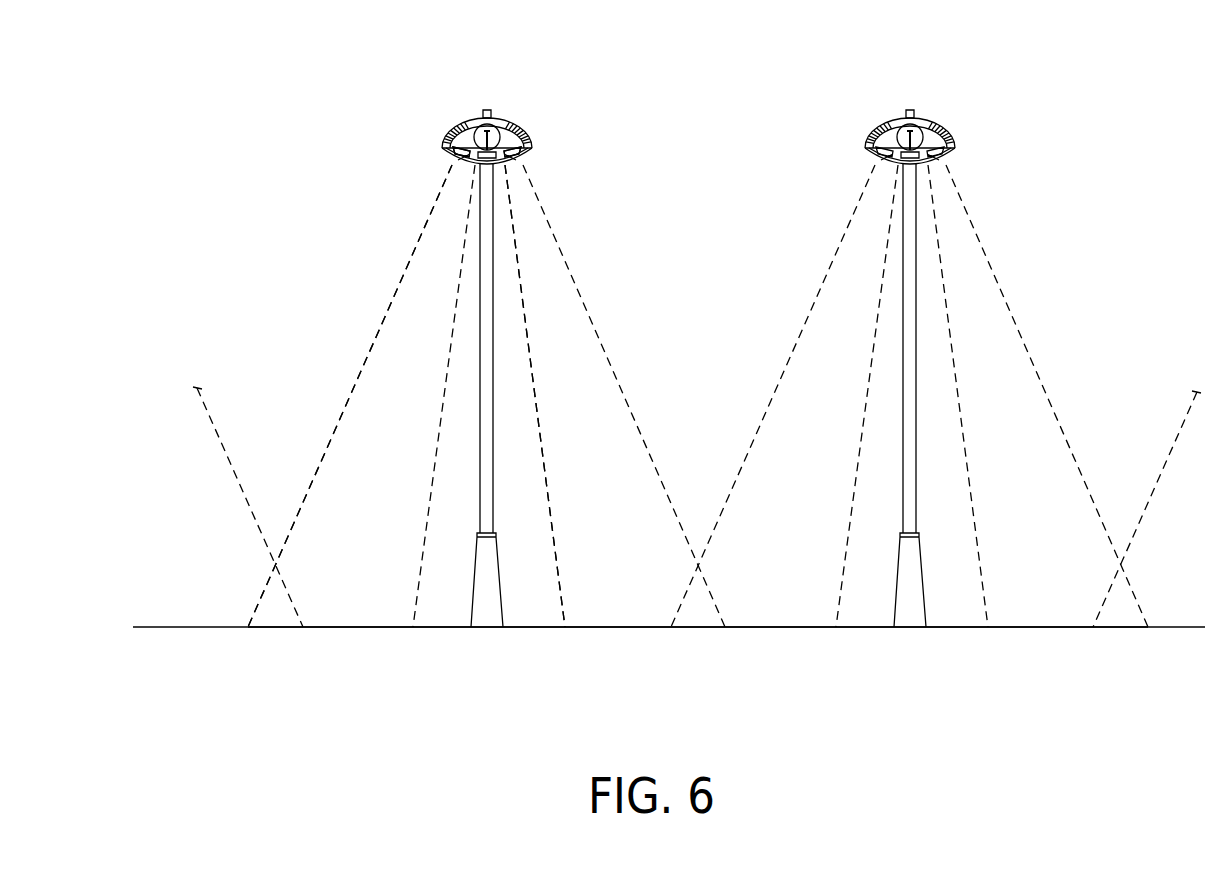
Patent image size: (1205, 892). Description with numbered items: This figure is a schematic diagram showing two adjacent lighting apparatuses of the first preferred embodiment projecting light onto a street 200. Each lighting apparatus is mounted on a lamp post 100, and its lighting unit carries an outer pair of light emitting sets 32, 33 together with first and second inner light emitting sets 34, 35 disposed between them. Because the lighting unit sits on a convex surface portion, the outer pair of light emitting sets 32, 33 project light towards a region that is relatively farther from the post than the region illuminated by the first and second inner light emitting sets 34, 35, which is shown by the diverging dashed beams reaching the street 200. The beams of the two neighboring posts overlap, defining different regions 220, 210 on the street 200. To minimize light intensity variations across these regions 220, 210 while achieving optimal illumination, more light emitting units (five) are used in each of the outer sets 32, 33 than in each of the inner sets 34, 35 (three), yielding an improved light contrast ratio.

The lamp post 100 is at (470, 287).
The outer light emitting set 32 is at (445, 151).
The outer light emitting set 33 is at (532, 150).
The first inner light emitting set 34 is at (463, 164).
The second inner light emitting set 35 is at (510, 166).
The street 200 is at (152, 622).
The region 210 is at (273, 627).
The region 220 is at (437, 627).